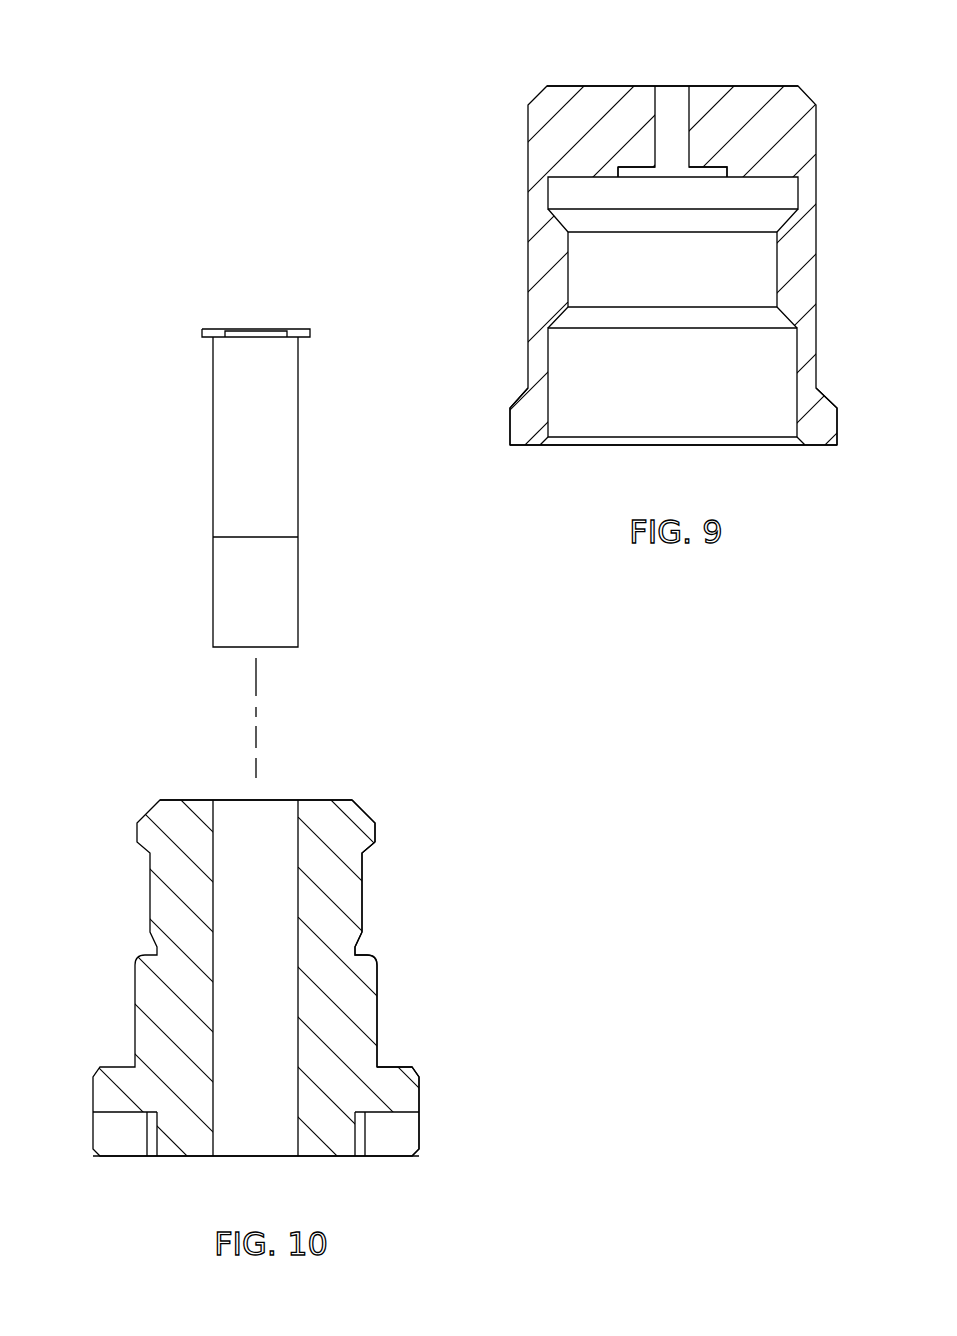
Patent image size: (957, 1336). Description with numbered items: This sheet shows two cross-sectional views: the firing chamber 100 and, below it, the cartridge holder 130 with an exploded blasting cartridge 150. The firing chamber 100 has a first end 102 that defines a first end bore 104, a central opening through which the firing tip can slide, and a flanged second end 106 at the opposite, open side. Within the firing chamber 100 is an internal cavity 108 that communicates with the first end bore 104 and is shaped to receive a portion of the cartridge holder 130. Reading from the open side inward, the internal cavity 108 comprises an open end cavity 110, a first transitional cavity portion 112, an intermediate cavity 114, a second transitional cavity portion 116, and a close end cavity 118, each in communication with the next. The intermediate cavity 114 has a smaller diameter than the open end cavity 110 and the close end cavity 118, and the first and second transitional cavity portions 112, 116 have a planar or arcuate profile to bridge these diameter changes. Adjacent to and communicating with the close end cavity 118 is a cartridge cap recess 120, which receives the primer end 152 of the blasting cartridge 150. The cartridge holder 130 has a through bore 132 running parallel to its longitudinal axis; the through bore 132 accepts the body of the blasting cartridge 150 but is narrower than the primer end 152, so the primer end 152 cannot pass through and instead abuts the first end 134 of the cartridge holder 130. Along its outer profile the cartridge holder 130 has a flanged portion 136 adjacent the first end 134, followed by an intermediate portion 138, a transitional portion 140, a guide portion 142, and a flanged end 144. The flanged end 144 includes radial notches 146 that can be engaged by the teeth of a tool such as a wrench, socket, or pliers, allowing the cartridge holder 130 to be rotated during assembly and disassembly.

In FIG. 9, the firing chamber 100 is at (528, 303).
In FIG. 9, the first end 102 is at (758, 85).
In FIG. 9, the first end bore 104 is at (670, 95).
In FIG. 9, the flanged second end 106 is at (510, 425).
In FIG. 9, the internal cavity 108 is at (582, 415).
In FIG. 9, the open end cavity 110 is at (659, 399).
In FIG. 9, the first transitional cavity portion 112 is at (680, 315).
In FIG. 9, the intermediate cavity 114 is at (664, 278).
In FIG. 9, the second transitional cavity portion 116 is at (648, 225).
In FIG. 9, the close end cavity 118 is at (649, 201).
In FIG. 9, the cartridge cap recess 120 is at (713, 172).
In FIG. 10, the cartridge holder 130 is at (139, 890).
In FIG. 10, the through bore 132 is at (240, 820).
In FIG. 10, the first end 134 is at (315, 800).
In FIG. 10, the flanged portion 136 is at (375, 833).
In FIG. 10, the intermediate portion 138 is at (362, 895).
In FIG. 10, the transitional portion 140 is at (356, 945).
In FIG. 10, the guide portion 142 is at (377, 1020).
In FIG. 10, the flanged end 144 is at (422, 1095).
In FIG. 10, the radial notches 146 is at (387, 1132).
In FIG. 10, the blasting cartridge 150 is at (213, 427).
In FIG. 10, the primer end 152 is at (254, 327).